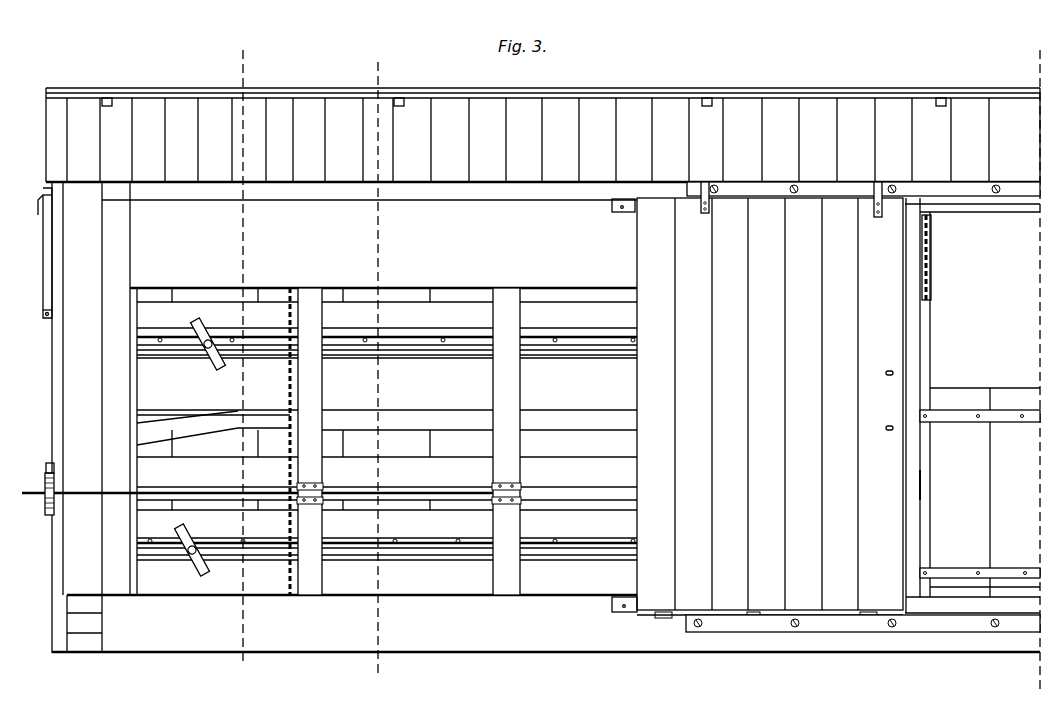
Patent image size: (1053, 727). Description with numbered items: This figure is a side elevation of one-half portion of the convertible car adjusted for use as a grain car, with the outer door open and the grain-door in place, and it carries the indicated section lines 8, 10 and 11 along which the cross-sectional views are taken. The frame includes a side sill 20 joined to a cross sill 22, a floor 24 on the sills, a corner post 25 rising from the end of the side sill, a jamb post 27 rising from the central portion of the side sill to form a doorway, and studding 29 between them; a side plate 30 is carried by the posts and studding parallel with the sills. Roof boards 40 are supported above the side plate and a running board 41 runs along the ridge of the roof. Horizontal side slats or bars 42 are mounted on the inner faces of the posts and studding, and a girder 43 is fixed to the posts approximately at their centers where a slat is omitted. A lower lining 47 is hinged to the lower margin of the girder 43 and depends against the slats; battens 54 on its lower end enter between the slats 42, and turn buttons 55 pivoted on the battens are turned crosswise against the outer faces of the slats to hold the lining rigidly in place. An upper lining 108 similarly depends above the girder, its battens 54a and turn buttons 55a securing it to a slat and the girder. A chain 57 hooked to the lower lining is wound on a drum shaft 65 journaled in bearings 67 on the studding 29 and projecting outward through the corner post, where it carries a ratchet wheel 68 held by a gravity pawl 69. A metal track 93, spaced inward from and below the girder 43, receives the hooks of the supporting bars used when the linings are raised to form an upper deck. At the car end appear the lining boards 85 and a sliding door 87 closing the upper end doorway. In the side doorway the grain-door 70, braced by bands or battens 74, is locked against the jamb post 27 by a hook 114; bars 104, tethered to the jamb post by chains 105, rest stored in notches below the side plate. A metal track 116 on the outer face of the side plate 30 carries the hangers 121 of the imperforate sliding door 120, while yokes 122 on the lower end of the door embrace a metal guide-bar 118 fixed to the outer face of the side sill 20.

The section line 8— 8 is at (242, 365).
The section line 10— 10 is at (1028, 375).
The section line 11— 11 is at (377, 371).
The side sill 20 is at (352, 616).
The cross sill 22 is at (96, 645).
The floor 24 is at (428, 596).
The corner post 25 is at (100, 417).
The jamb post 27 is at (913, 348).
The studding 29 is at (409, 441).
The side plate 30 is at (394, 192).
The roof boards 40 is at (543, 135).
The running board 41 is at (801, 97).
The side slats or bars 42 is at (387, 441).
The girder 43 is at (415, 391).
The lower lining 47 is at (271, 432).
The cleats or battens 54 is at (412, 550).
The cleats or battens 54a is at (392, 339).
The turn button 55 is at (196, 565).
The turn button 55a is at (214, 364).
The chain 57 is at (290, 384).
The drum shaft 65 is at (430, 464).
The bearings 67 is at (310, 504).
The ratchet wheel 68 is at (55, 490).
The gravity pawl 69 is at (55, 468).
The grain-door 70 is at (972, 500).
The bands or battens 74 is at (1004, 423).
The boards 85 is at (58, 351).
The sliding door 87 is at (43, 262).
The metal track 93 is at (387, 421).
The bar 104 is at (976, 206).
The chain 105 is at (932, 258).
The upper lining 108 is at (411, 297).
The hook 114 is at (923, 493).
The metal track 116 is at (929, 192).
The metal guide-bar 118 is at (863, 623).
The imperforate door 120 is at (757, 406).
The hanger 121 is at (704, 215).
The yoke 122 is at (757, 612).